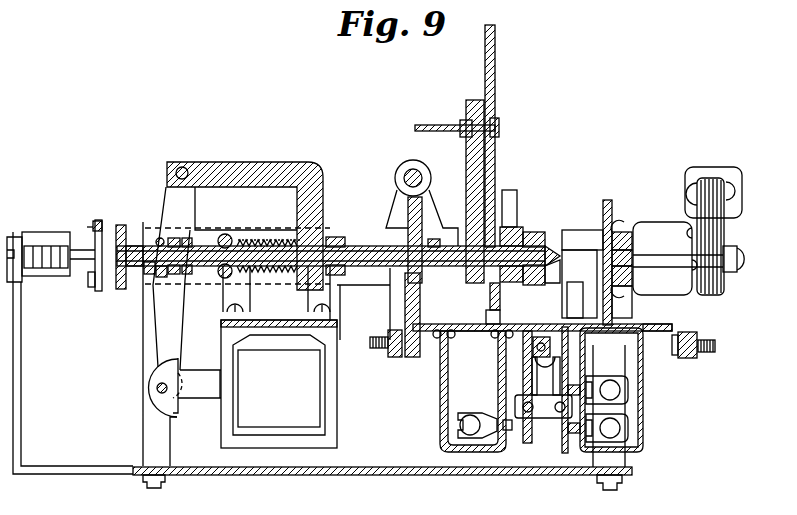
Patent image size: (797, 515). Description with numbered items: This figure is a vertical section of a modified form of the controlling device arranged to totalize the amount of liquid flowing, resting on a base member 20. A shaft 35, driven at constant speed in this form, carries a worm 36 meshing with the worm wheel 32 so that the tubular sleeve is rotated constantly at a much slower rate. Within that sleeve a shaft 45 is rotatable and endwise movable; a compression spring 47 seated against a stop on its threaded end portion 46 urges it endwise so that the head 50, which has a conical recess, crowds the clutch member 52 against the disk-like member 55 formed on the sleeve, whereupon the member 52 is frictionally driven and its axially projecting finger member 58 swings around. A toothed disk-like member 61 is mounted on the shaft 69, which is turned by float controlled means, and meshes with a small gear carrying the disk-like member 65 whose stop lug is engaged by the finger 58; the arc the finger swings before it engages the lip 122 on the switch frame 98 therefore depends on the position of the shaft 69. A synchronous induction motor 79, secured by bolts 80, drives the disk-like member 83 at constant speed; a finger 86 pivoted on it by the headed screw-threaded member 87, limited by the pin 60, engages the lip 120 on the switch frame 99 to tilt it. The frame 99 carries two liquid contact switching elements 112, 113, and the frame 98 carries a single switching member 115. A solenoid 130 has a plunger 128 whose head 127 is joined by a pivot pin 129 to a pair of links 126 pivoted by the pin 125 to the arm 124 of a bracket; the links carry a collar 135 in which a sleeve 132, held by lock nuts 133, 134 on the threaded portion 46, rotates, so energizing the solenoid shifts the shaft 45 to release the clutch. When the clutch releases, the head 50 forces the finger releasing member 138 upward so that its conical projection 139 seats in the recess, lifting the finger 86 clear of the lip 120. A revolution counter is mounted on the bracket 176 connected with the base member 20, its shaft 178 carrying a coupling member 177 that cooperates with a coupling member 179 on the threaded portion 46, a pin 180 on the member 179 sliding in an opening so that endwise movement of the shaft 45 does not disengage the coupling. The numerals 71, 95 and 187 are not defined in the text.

The base member 20 is at (374, 476).
The worm wheel 32 is at (405, 305).
The shaft 35 is at (402, 168).
The worm 36 is at (413, 168).
The shaft 45 is at (358, 250).
The threaded end portion 46 is at (136, 268).
The compression spring 47 is at (258, 274).
The head 50 is at (538, 232).
The clutch member 52 is at (520, 228).
The disk-like member 55 is at (512, 190).
The finger member 58 is at (515, 178).
The pin 60 is at (583, 297).
The disk-like member 61 is at (496, 64).
The disk-like member 65 is at (489, 294).
The shaft 69 is at (440, 124).
The counter 71 is at (36, 234).
The motor 79 is at (652, 228).
The bolts 80 is at (683, 262).
The disk-like member 83 is at (624, 298).
The finger 86 is at (626, 320).
The headed screw-threaded member 87 is at (606, 224).
The adjusting screw 95 is at (378, 348).
The switch frame 98 is at (432, 332).
The switch frame 99 is at (647, 332).
The switching element 112 is at (622, 432).
The switching element 113 is at (622, 392).
The switching member 115 is at (466, 428).
The lip or fin 120 is at (590, 334).
The lip or fin 122 is at (492, 326).
The arm 124 is at (256, 163).
The pivot pin 125 is at (182, 167).
The links 126 is at (163, 330).
The head 127 is at (165, 408).
The plunger 128 is at (199, 399).
The pivot pin 129 is at (156, 388).
The solenoid 130 is at (312, 414).
The sleeve 132 is at (164, 278).
The lock nut 133 is at (146, 286).
The lock nut 134 is at (188, 240).
The collar 135 is at (178, 238).
The finger releasing member 138 is at (566, 297).
The conical projection 139 is at (550, 290).
The bracket 176 is at (22, 372).
The coupling member 177 is at (93, 278).
The shaft 178 is at (78, 250).
The coupling member 179 is at (121, 228).
The pin 180 is at (100, 222).
The reset tab 187 is at (90, 221).